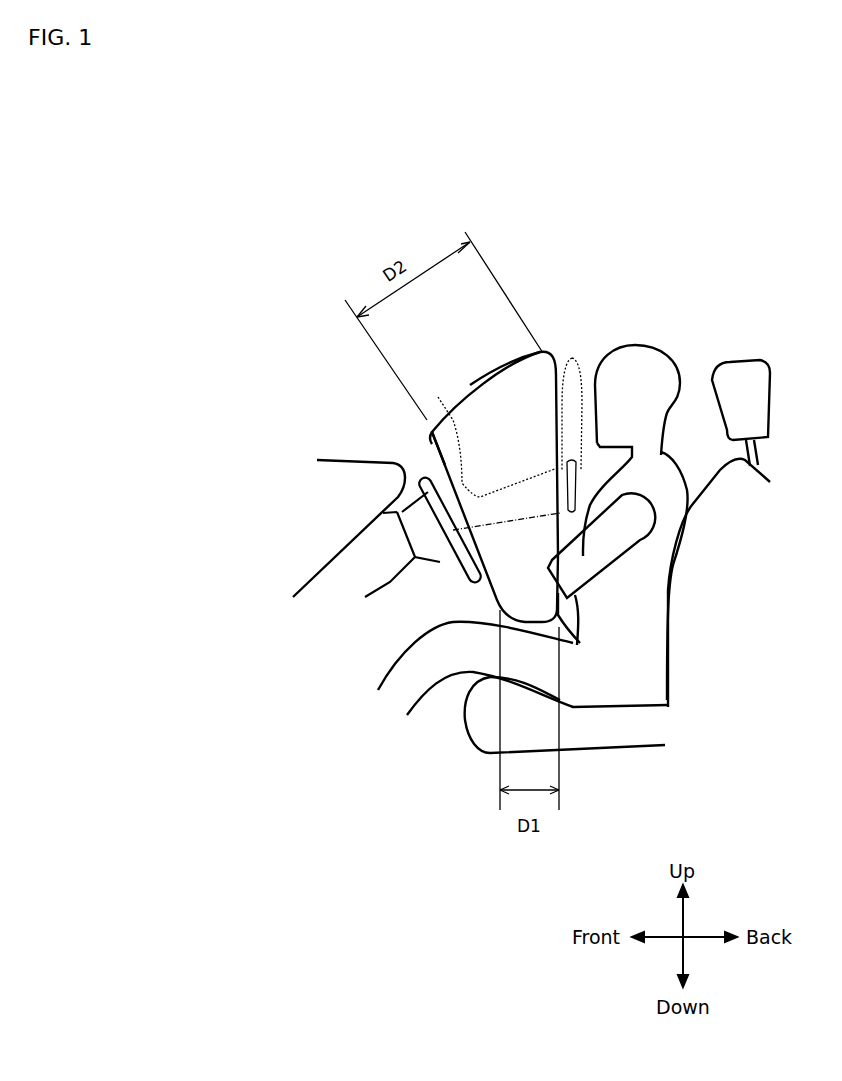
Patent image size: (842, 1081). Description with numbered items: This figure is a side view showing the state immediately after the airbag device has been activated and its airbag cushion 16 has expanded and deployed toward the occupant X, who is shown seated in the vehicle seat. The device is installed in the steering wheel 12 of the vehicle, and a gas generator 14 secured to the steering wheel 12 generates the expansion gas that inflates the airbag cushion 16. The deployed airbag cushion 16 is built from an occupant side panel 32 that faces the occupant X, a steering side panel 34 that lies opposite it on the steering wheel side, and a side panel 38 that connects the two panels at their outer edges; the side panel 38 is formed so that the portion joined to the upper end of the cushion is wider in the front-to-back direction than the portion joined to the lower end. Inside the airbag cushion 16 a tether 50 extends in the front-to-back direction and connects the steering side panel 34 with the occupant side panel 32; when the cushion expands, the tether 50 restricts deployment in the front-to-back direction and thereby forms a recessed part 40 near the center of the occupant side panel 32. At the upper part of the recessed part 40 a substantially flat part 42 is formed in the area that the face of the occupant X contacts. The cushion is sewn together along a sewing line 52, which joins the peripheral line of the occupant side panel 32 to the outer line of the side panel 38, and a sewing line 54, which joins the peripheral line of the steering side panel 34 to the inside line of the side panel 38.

The steering wheel 12 is at (453, 570).
The gas generator 14 is at (437, 523).
The airbag cushion 16 is at (517, 357).
The occupant side panel 32 is at (565, 523).
The steering side panel 34 is at (430, 443).
The side panel 38 is at (487, 387).
The recessed part 40 is at (573, 485).
The substantially flat part 42 is at (577, 358).
The tether 50 is at (491, 451).
The sewing line 52 is at (560, 605).
The sewing line 54 is at (427, 463).
The occupant X is at (640, 375).